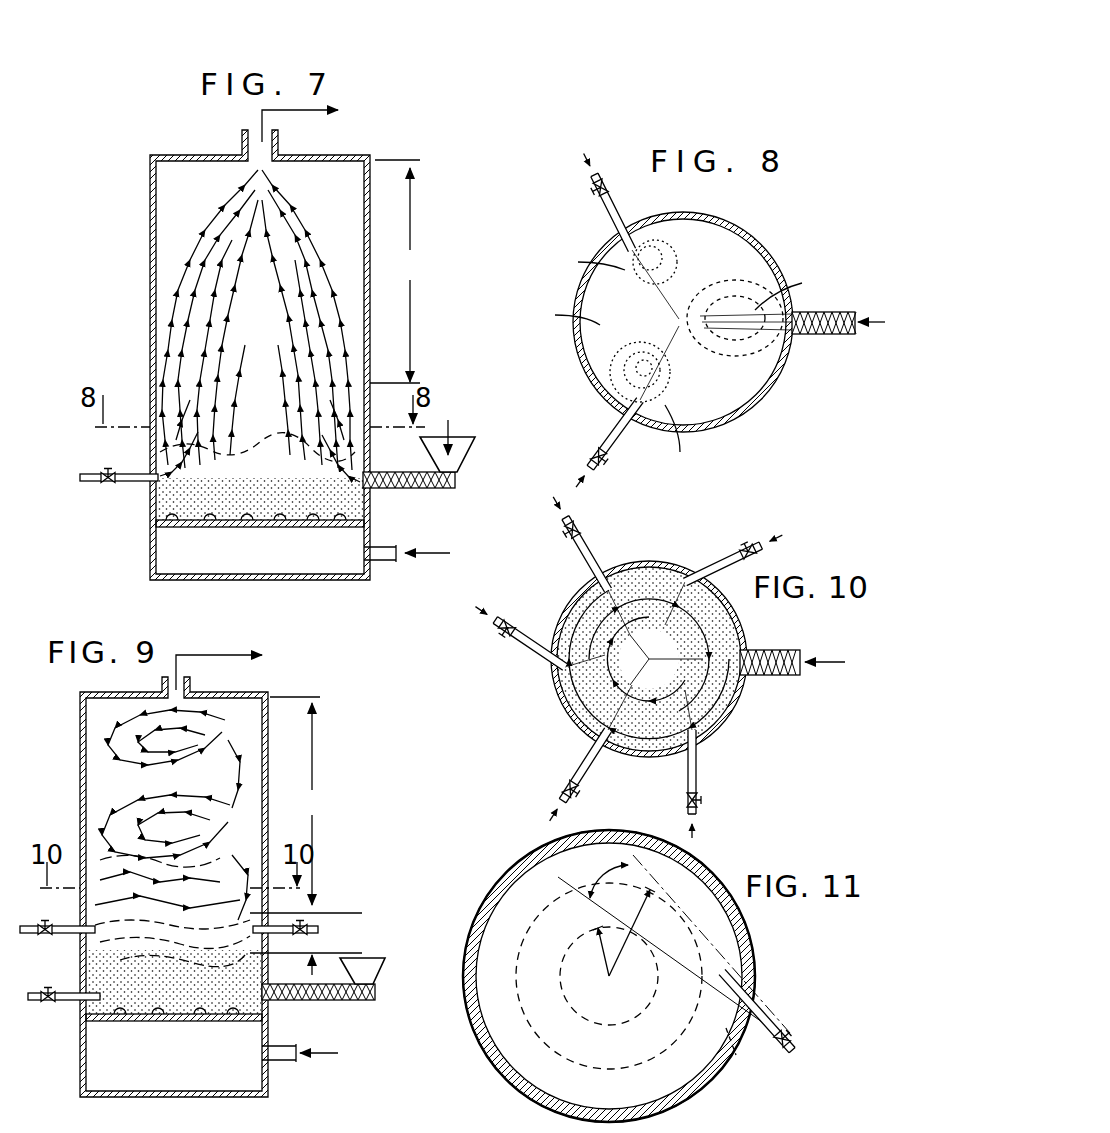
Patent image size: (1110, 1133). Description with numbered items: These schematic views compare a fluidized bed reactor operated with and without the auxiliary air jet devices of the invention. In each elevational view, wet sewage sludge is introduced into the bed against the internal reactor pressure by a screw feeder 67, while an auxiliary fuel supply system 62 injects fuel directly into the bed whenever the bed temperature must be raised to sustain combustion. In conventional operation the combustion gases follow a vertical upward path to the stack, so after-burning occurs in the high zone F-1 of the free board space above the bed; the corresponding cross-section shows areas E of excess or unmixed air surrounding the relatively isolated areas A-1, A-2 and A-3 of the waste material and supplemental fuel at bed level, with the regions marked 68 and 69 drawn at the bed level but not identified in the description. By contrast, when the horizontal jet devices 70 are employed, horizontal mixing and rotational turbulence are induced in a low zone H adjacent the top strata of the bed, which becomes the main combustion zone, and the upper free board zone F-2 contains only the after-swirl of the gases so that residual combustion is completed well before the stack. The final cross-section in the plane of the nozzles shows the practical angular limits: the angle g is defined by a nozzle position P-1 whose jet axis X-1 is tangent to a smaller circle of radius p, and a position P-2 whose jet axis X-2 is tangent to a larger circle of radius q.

In FIG. 7, the auxiliary fuel supply system 62 is at (143, 482).
In FIG. 9, the auxiliary fuel supply system 62 is at (62, 992).
In FIG. 8, the auxiliary fuel supply system 62 is at (612, 218).
In FIG. 10, the auxiliary fuel supply system 62 is at (585, 555).
In FIG. 7, the screw feeder 67 is at (412, 491).
In FIG. 9, the screw feeder 67 is at (312, 1003).
In FIG. 7, the combustion zone / flame from feeder 68 is at (312, 458).
In FIG. 8, the combustion zone / flame from feeder 68 is at (728, 283).
In FIG. 7, the combustion zone / flame from gas inlet 69 is at (190, 451).
In FIG. 8, the combustion zone / flame from gas inlet 69 is at (665, 258).
In FIG. 9, the jet devices 70 is at (66, 926).
In FIG. 10, the jet devices 70 is at (710, 570).
In FIG. 7, the high zone of the free board space F-1 is at (406, 265).
In FIG. 9, the upper free board zone F-2 is at (318, 800).
In FIG. 9, the low zone H is at (337, 932).
In FIG. 8, the isolated area of waste material A-1 is at (795, 288).
In FIG. 8, the isolated area of supplemental fuel A-2 is at (681, 434).
In FIG. 8, the isolated area of supplemental fuel A-3 is at (581, 258).
In FIG. 8, the areas of excess or unmixed air E is at (568, 312).
In FIG. 11, the jet axis X-1 is at (565, 879).
In FIG. 11, the jet axis X-2 is at (690, 853).
In FIG. 11, the radius of smaller circle p is at (600, 956).
In FIG. 11, the radius of larger circle q is at (638, 918).
In FIG. 11, the angle g is at (612, 880).
In FIG. 11, the position of the jet nozzle P-1 is at (738, 1050).
In FIG. 11, the position of the jet nozzle P-2 is at (745, 985).